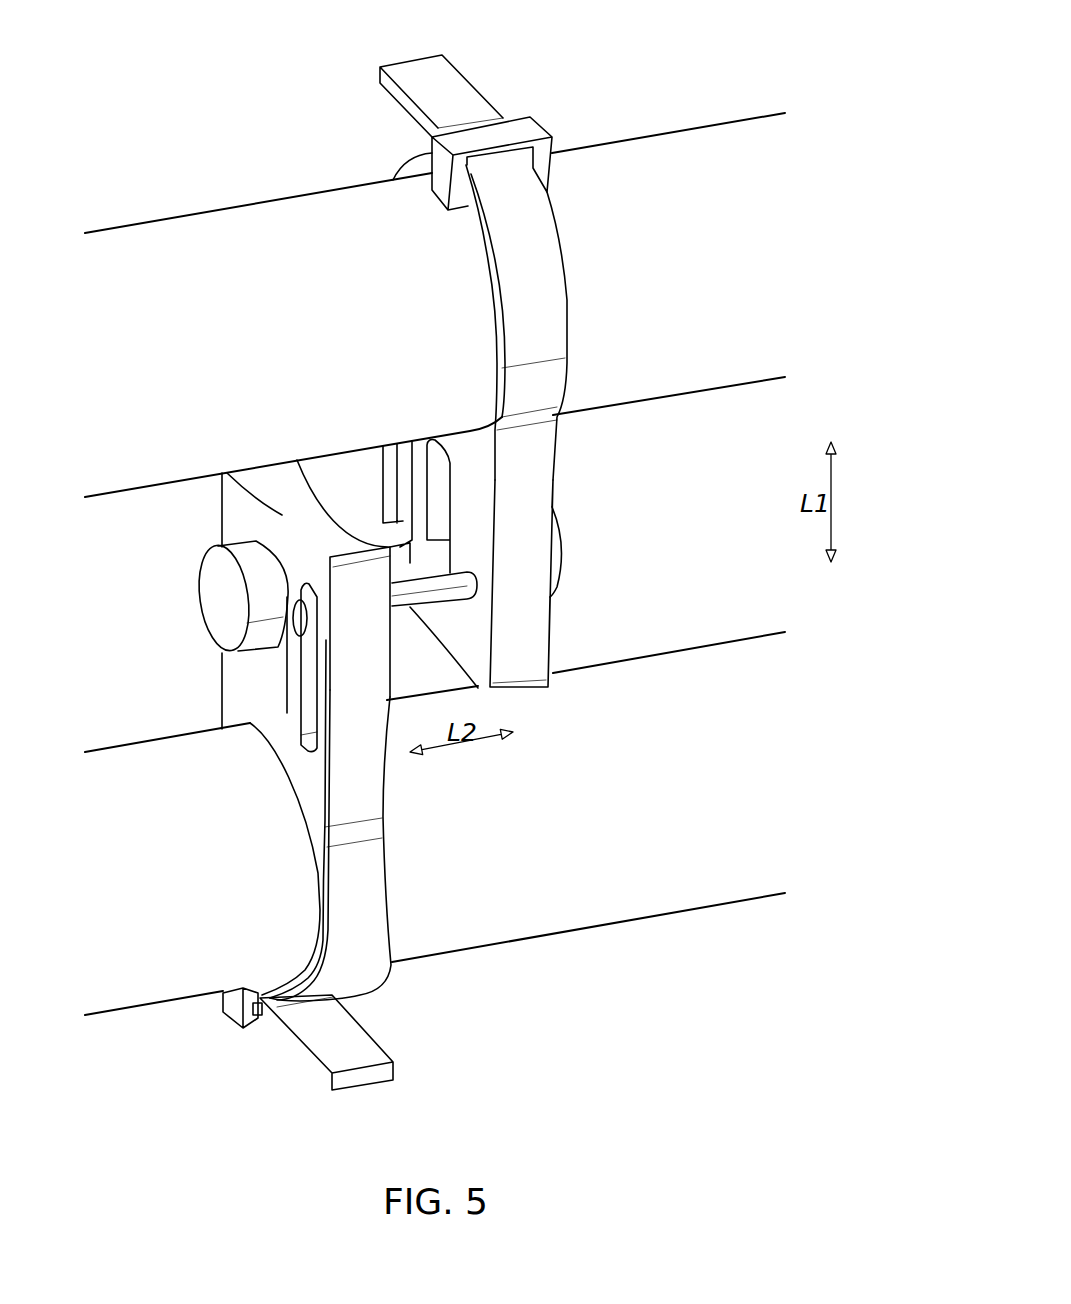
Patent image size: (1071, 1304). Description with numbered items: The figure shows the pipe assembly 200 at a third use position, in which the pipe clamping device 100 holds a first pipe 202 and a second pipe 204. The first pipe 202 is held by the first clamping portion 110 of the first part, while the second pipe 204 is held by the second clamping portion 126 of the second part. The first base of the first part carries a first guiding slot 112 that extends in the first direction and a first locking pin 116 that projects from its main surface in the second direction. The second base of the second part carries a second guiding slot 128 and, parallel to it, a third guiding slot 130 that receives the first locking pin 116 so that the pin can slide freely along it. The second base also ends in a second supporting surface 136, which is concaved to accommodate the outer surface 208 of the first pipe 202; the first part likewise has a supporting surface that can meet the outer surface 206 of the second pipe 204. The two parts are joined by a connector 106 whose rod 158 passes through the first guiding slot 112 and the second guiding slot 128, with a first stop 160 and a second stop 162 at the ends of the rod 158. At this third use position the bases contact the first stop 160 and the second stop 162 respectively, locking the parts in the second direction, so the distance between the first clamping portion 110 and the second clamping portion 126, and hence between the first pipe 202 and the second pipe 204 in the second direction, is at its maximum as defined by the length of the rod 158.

The pipe clamping device 100 is at (668, 523).
The connector 106 is at (211, 597).
The first clamping portion 110 is at (538, 264).
The first guiding slot 112 is at (535, 576).
The first locking pin 116 is at (403, 595).
The second clamping portion 126 is at (368, 913).
The second guiding slot 128 is at (252, 614).
The third guiding slot 130 is at (300, 720).
The second supporting surface 136 is at (280, 507).
The rod 158 is at (410, 563).
The first stop 160 is at (563, 558).
The second stop 162 is at (217, 623).
The pipe assembly 200 is at (688, 47).
The first pipe 202 is at (745, 119).
The second pipe 204 is at (746, 900).
The outer surface of the second pipe 206 is at (752, 657).
The outer surface of the first pipe 208 is at (737, 357).